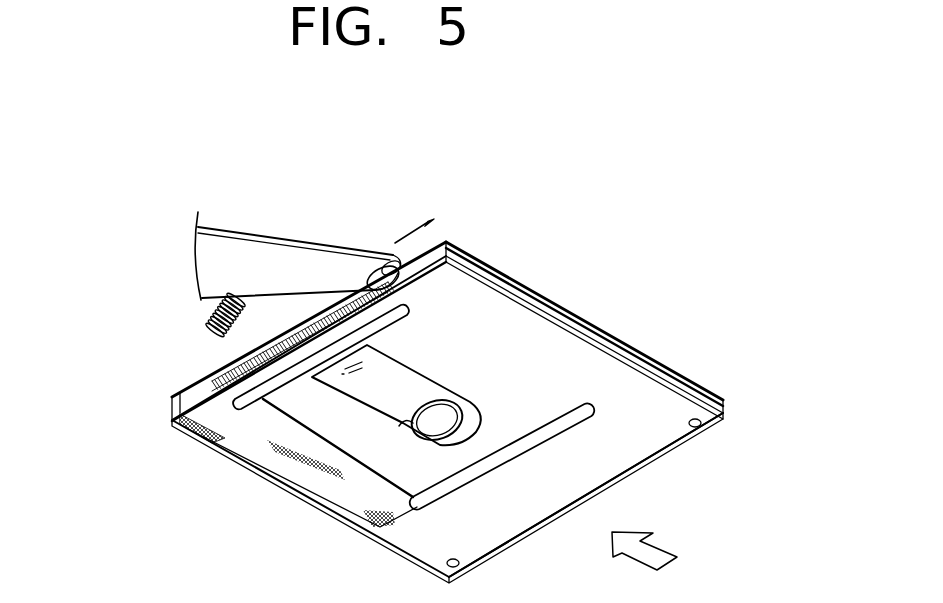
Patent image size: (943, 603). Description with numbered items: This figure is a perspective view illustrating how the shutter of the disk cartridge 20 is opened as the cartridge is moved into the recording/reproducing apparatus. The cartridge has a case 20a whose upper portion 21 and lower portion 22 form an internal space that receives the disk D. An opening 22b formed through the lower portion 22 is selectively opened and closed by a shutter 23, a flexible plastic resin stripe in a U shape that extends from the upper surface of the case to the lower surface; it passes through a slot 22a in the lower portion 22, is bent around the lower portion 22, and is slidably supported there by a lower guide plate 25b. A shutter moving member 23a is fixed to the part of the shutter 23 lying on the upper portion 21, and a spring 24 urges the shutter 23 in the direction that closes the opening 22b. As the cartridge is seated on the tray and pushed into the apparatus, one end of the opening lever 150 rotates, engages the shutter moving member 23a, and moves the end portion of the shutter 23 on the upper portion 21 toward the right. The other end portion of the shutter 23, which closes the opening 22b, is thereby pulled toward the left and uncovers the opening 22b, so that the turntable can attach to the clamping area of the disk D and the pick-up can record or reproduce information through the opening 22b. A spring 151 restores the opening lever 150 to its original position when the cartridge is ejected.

The disk cartridge 20 is at (644, 292).
The case 20a is at (657, 475).
The upper portion 21 is at (522, 287).
The lower portion 22 is at (563, 322).
The slot 22a is at (190, 426).
The opening 22b is at (407, 431).
The shutter 23 is at (293, 475).
The shutter moving member 23a is at (377, 268).
The spring 24 is at (201, 372).
The lower guide plate 25b is at (403, 312).
The opening lever 150 is at (258, 228).
The spring 151 is at (206, 316).
The disk D is at (398, 390).